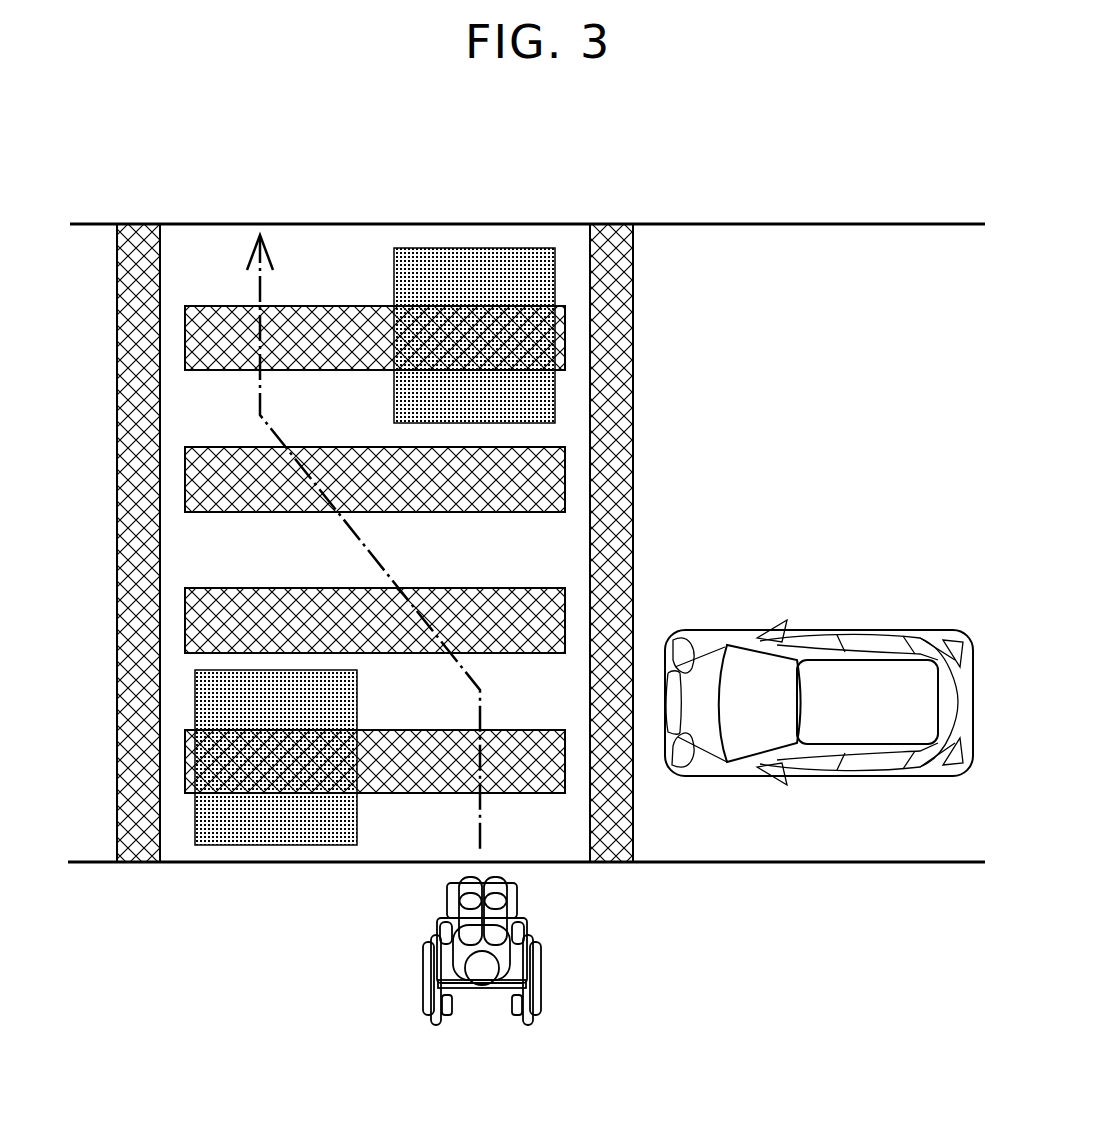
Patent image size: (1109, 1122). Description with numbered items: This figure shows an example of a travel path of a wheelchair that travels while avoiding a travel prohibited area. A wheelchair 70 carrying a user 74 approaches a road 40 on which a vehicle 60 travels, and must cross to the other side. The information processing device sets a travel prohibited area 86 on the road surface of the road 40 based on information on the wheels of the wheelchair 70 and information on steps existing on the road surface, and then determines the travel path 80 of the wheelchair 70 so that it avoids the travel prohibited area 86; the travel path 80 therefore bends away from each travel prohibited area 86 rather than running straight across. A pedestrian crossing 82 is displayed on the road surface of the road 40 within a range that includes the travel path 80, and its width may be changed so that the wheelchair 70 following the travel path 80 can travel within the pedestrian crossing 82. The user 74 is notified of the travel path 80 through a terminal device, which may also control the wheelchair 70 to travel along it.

The road 40 is at (906, 281).
The vehicle 60 is at (873, 630).
The wheelchair 70 is at (532, 981).
The user 74 is at (480, 976).
The travel path 80 is at (372, 557).
The pedestrian crossing 82 is at (632, 392).
The travel prohibited area 86 is at (475, 270).